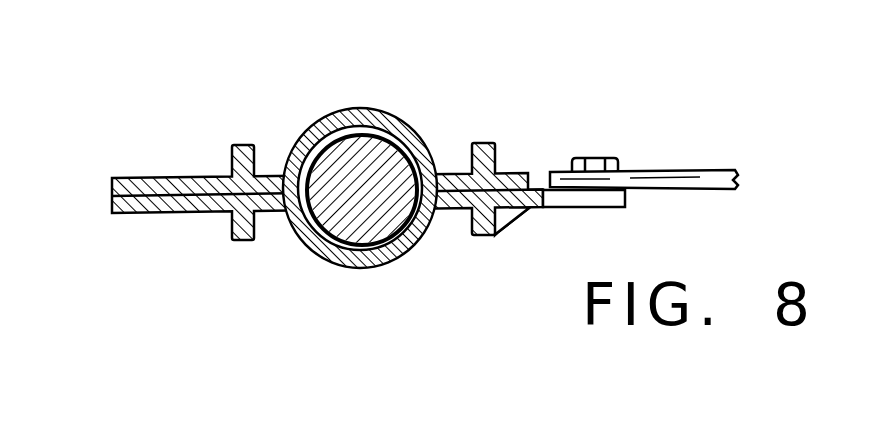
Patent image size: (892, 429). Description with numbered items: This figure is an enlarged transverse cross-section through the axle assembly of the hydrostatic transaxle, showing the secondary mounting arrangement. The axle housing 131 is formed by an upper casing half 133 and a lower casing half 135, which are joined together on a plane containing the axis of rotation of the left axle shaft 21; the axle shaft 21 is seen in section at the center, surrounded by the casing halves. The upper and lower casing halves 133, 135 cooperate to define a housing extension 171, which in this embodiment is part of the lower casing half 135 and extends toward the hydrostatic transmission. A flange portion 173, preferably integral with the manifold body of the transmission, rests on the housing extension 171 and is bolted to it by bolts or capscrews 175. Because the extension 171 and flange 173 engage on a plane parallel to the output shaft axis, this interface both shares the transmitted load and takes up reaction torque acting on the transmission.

The axle housing 131 is at (94, 192).
The upper casing half 133 is at (361, 108).
The lower casing half 135 is at (340, 262).
The left axle shaft 21 is at (383, 222).
The housing extension 171 is at (582, 197).
The flange portion 173 is at (693, 172).
The bolts or capscrews 175 is at (598, 157).